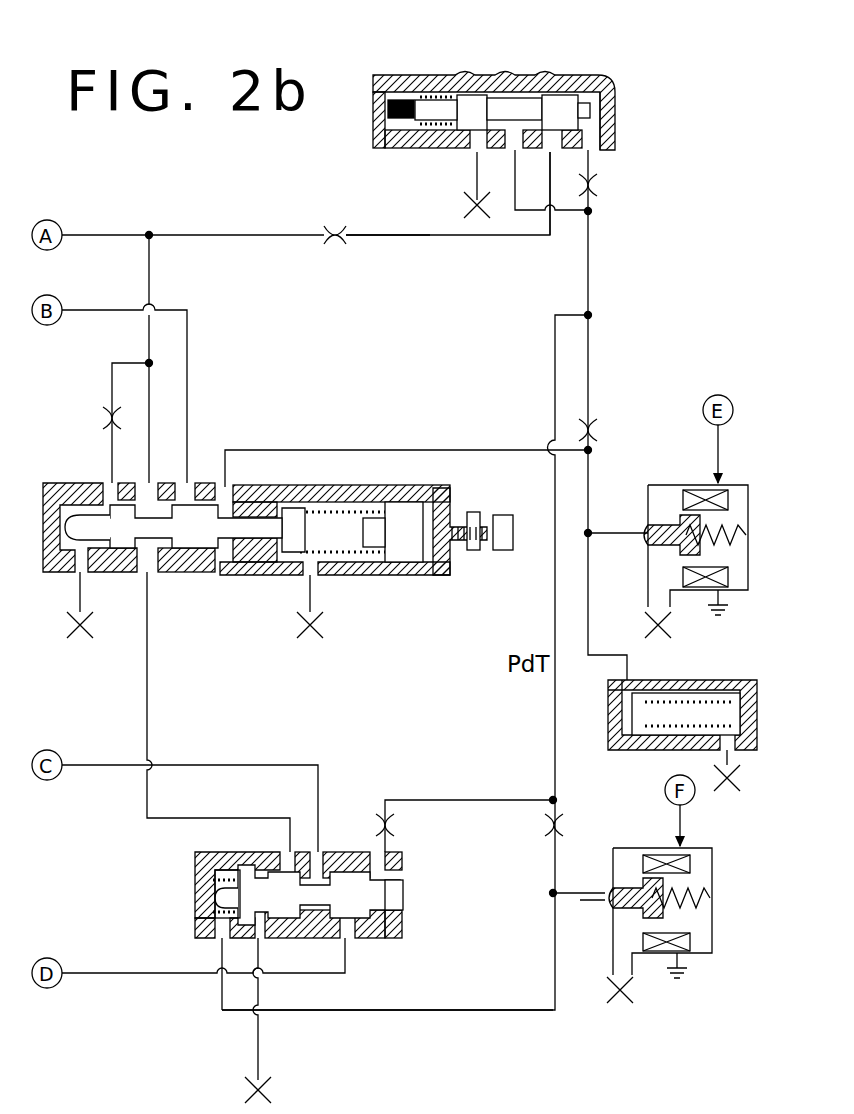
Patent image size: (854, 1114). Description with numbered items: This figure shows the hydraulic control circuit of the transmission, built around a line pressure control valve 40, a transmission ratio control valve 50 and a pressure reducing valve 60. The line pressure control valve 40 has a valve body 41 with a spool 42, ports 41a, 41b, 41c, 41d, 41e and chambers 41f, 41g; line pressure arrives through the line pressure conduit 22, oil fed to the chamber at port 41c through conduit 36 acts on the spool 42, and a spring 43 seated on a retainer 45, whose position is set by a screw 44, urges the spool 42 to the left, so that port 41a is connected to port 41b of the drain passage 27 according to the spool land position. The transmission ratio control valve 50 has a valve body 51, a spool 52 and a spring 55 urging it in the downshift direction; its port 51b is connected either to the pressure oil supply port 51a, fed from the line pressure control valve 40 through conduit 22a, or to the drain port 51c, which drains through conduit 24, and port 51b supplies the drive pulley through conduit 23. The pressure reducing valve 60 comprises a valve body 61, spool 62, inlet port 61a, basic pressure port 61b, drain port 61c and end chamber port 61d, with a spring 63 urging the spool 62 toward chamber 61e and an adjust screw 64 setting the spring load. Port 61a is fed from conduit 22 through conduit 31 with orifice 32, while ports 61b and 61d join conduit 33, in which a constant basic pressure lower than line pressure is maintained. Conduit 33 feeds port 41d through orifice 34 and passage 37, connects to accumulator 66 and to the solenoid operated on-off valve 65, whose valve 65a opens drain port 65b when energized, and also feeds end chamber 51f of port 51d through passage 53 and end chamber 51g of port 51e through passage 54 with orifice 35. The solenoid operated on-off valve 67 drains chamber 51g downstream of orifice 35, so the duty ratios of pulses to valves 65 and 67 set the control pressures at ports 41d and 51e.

The line pressure conduit 22 is at (118, 216).
The conduit 22a is at (175, 732).
The conduit 23 is at (116, 766).
The conduit 24 is at (118, 975).
The drain passage 27 is at (120, 309).
The conduit 31 is at (380, 237).
The orifice 32 is at (338, 246).
The conduit 33 is at (590, 264).
The orifice 34 is at (600, 428).
The orifice 35 is at (545, 830).
The conduit 36 is at (110, 400).
The passage 37 is at (395, 449).
The line pressure control valve 40 is at (72, 568).
The valve body 41 is at (270, 521).
The port 41a is at (170, 480).
The port 41b is at (195, 480).
The port 41c is at (108, 480).
The port 41d is at (232, 490).
The port 41e is at (133, 580).
The chamber 41f is at (152, 565).
The chamber 41g is at (232, 555).
The spool 42 is at (188, 548).
The spring 43 is at (345, 558).
The screw 44 is at (503, 548).
The retainer 45 is at (408, 565).
The transmission ratio control valve 50 is at (314, 877).
The valve body 51 is at (302, 872).
The pressure oil supply port 51a is at (282, 850).
The port 51b is at (323, 850).
The drain port 51c is at (345, 942).
The port 51d is at (402, 868).
The port 51e is at (212, 940).
The end chamber 51f is at (408, 920).
The end chamber 51g is at (212, 895).
The spool 52 is at (355, 935).
The passage 53 is at (440, 800).
The passage 54 is at (430, 1012).
The spring 55 is at (205, 880).
The pressure reducing valve 60 is at (537, 89).
The valve body 61 is at (536, 89).
The inlet port 61a is at (548, 195).
The basic pressure port 61b is at (510, 195).
The drain port 61c is at (466, 155).
The end chamber port 61d is at (600, 160).
The chamber 61e is at (605, 80).
The spool 62 is at (565, 85).
The spring 63 is at (430, 95).
The adjust screw 64 is at (393, 95).
The solenoid operated on-off valve 65 is at (668, 531).
The valve 65a is at (660, 552).
The drain port 65b is at (630, 530).
The accumulator 66 is at (730, 684).
The solenoid operated on-off valve 67 is at (712, 950).